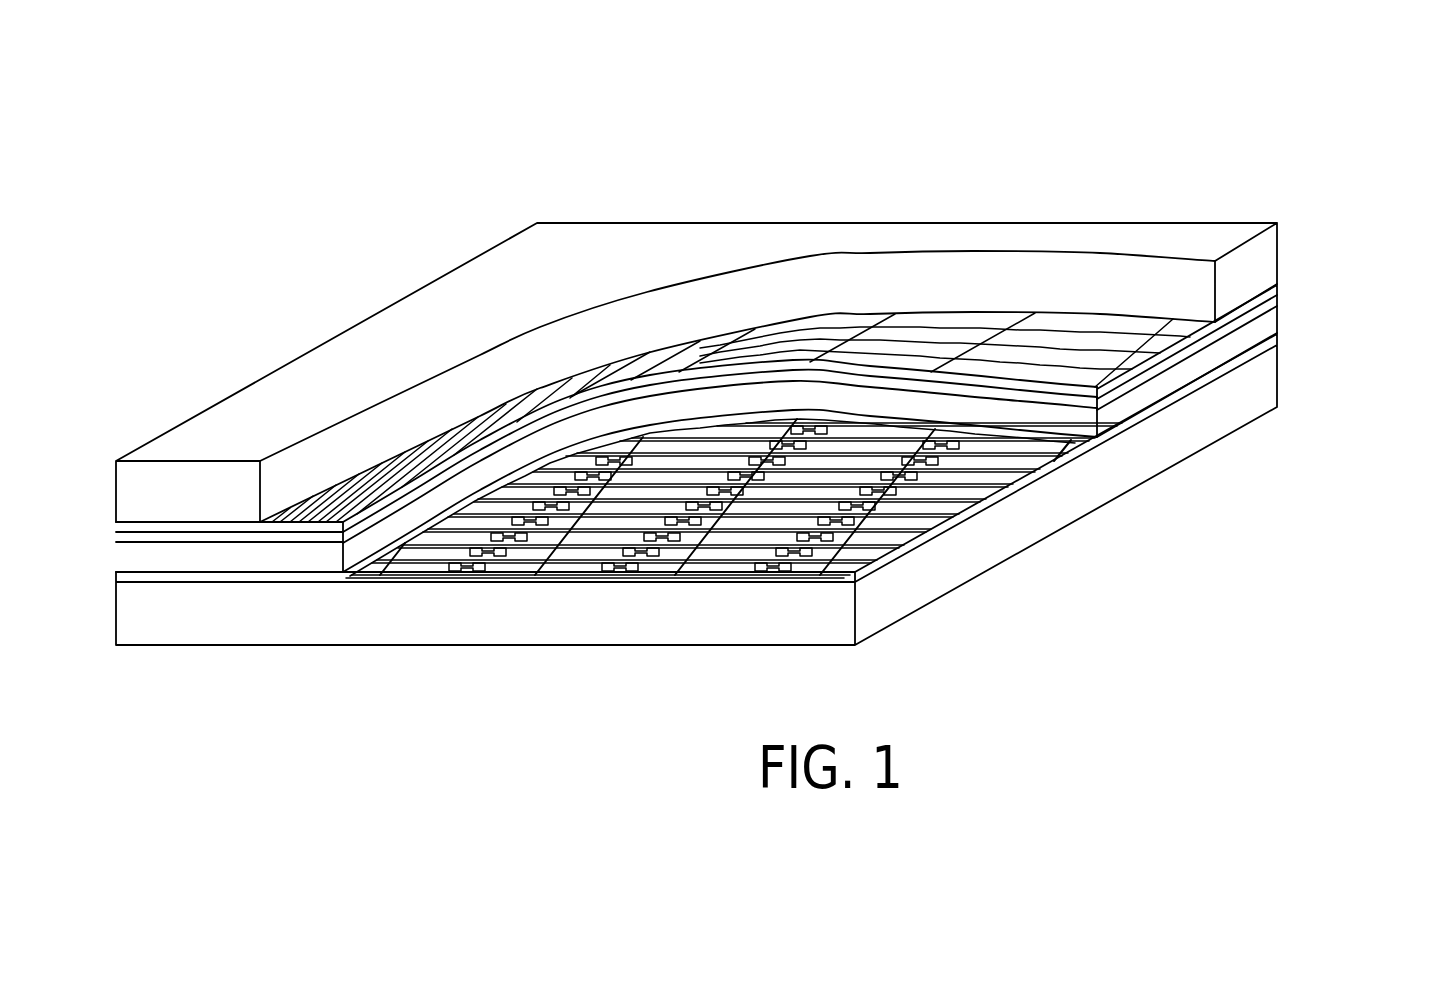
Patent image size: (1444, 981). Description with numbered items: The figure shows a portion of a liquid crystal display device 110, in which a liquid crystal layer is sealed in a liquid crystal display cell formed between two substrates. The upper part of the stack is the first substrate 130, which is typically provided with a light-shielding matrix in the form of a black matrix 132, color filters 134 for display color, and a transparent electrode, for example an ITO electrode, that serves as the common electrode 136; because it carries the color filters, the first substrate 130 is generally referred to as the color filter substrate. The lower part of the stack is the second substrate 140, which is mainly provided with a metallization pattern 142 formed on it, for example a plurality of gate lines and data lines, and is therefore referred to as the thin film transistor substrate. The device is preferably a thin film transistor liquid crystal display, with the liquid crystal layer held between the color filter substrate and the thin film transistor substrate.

The liquid crystal display device 110 is at (1270, 325).
The first substrate 130 is at (1273, 262).
The black matrix 132 is at (1083, 322).
The color filters 134 is at (1273, 291).
The common electrode 136 is at (1273, 304).
The second substrate 140 is at (1240, 393).
The metallization pattern 142 is at (970, 502).